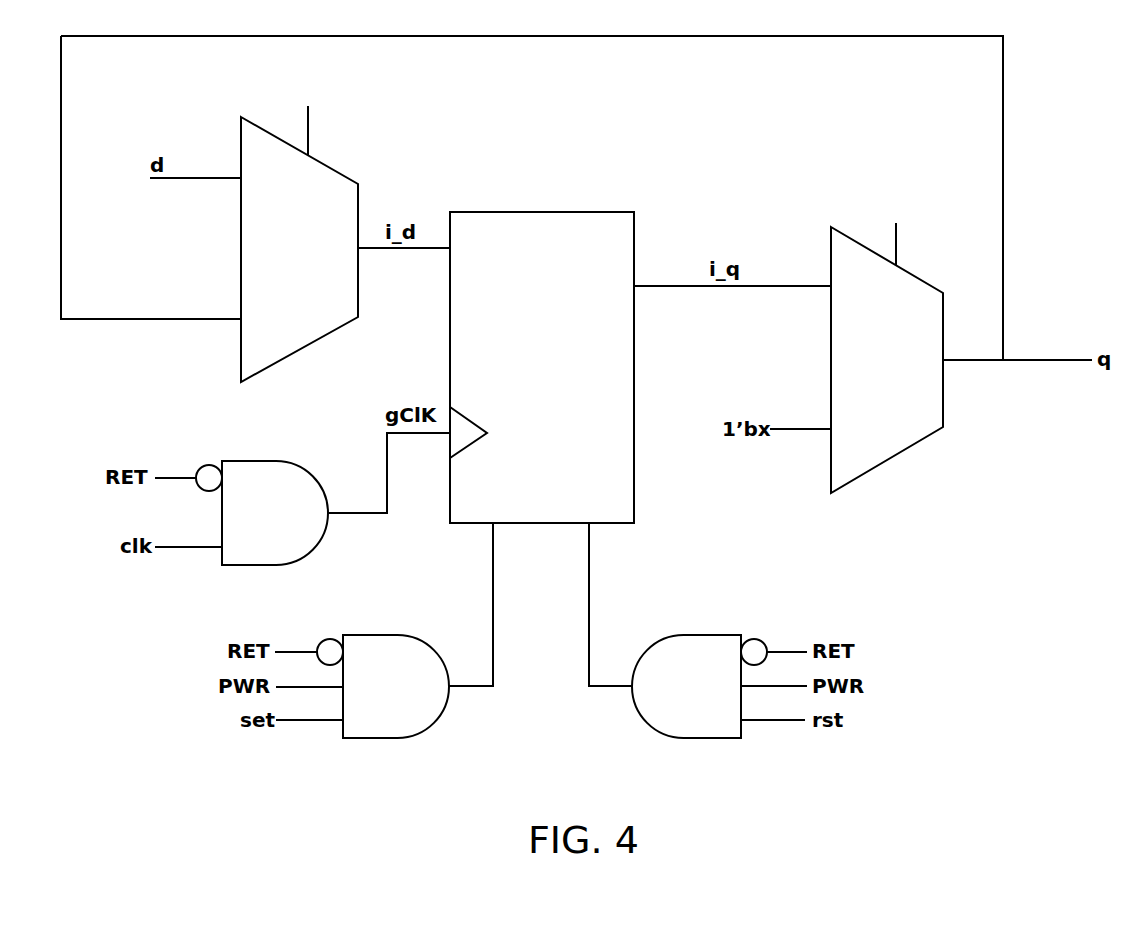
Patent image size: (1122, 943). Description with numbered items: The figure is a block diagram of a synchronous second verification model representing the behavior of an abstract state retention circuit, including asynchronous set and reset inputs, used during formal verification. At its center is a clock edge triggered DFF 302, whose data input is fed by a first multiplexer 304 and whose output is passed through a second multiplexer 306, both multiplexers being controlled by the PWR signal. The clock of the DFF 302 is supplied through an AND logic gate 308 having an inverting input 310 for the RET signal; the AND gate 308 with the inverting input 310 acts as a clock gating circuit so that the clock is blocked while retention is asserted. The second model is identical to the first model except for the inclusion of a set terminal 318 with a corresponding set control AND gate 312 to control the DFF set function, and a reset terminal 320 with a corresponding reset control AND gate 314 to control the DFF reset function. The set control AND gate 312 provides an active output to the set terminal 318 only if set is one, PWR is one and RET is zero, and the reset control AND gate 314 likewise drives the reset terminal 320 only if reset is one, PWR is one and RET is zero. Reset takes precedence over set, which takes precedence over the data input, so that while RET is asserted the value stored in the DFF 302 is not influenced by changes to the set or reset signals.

The clock edge triggered DFF 302 is at (587, 221).
The first multiplexer 304 is at (345, 177).
The second multiplexer 306 is at (902, 458).
The AND logic gate 308 is at (262, 566).
The inverting input 310 is at (205, 465).
The set control AND gate 312 is at (382, 634).
The reset control AND gate 314 is at (707, 634).
The set terminal 318 is at (483, 690).
The reset terminal 320 is at (607, 690).